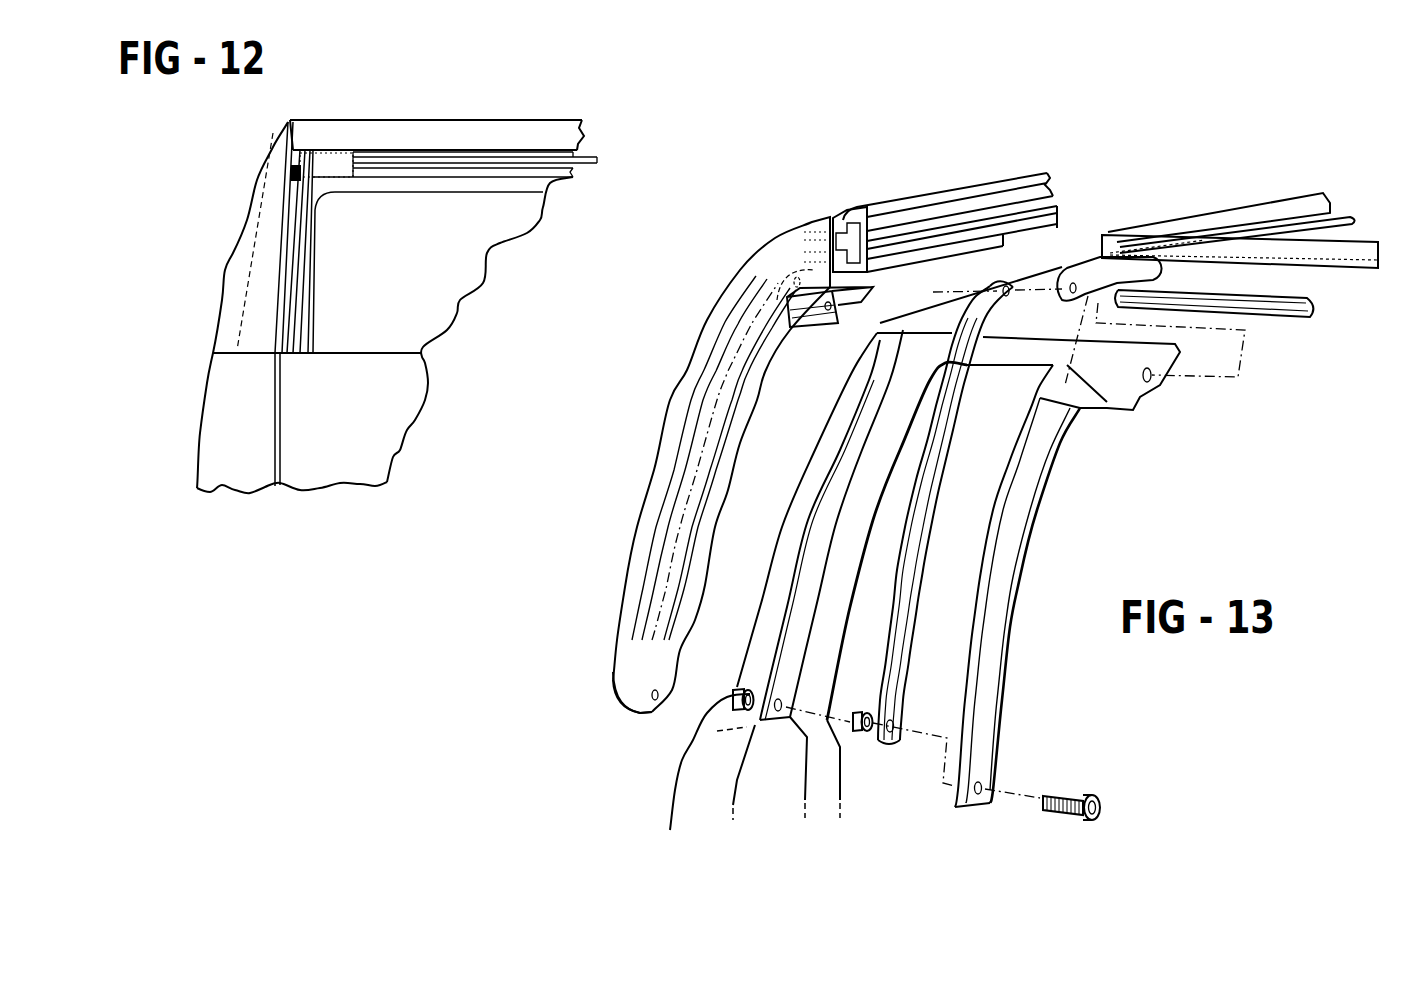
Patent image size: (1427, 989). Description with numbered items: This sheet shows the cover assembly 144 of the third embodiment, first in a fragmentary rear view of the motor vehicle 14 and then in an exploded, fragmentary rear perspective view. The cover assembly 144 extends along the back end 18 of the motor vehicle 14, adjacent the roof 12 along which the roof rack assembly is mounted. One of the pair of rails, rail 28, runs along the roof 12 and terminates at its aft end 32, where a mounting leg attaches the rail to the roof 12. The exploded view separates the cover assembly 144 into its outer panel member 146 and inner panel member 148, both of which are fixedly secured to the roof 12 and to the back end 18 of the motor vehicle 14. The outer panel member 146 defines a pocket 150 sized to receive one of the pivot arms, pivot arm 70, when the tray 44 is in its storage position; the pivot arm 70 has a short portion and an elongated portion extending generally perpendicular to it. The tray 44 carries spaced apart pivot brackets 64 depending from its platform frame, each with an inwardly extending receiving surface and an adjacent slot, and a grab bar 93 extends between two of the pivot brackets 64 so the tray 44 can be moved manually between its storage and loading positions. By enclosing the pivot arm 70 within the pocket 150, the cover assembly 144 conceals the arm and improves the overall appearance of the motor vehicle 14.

In FIG. 13, the roof 12 is at (1060, 266).
In FIG. 12, the motor vehicle 14 is at (197, 420).
In FIG. 12, the back end 18 is at (377, 355).
In FIG. 13, the back end 18 is at (737, 788).
In FIG. 13, the rail 28 is at (1008, 182).
In FIG. 13, the aft end 32 is at (898, 207).
In FIG. 12, the tray 44 is at (452, 120).
In FIG. 13, the tray 44 is at (1297, 197).
In FIG. 13, the pivot bracket 64 is at (1140, 280).
In FIG. 13, the pivot arm 70 is at (915, 575).
In FIG. 13, the grab bar 93 is at (1283, 320).
In FIG. 12, the cover assembly 144 is at (274, 120).
In FIG. 13, the cover assembly 144 is at (606, 695).
In FIG. 13, the outer panel member 146 is at (645, 508).
In FIG. 13, the inner panel member 148 is at (1002, 687).
In FIG. 13, the pocket 150 is at (720, 330).